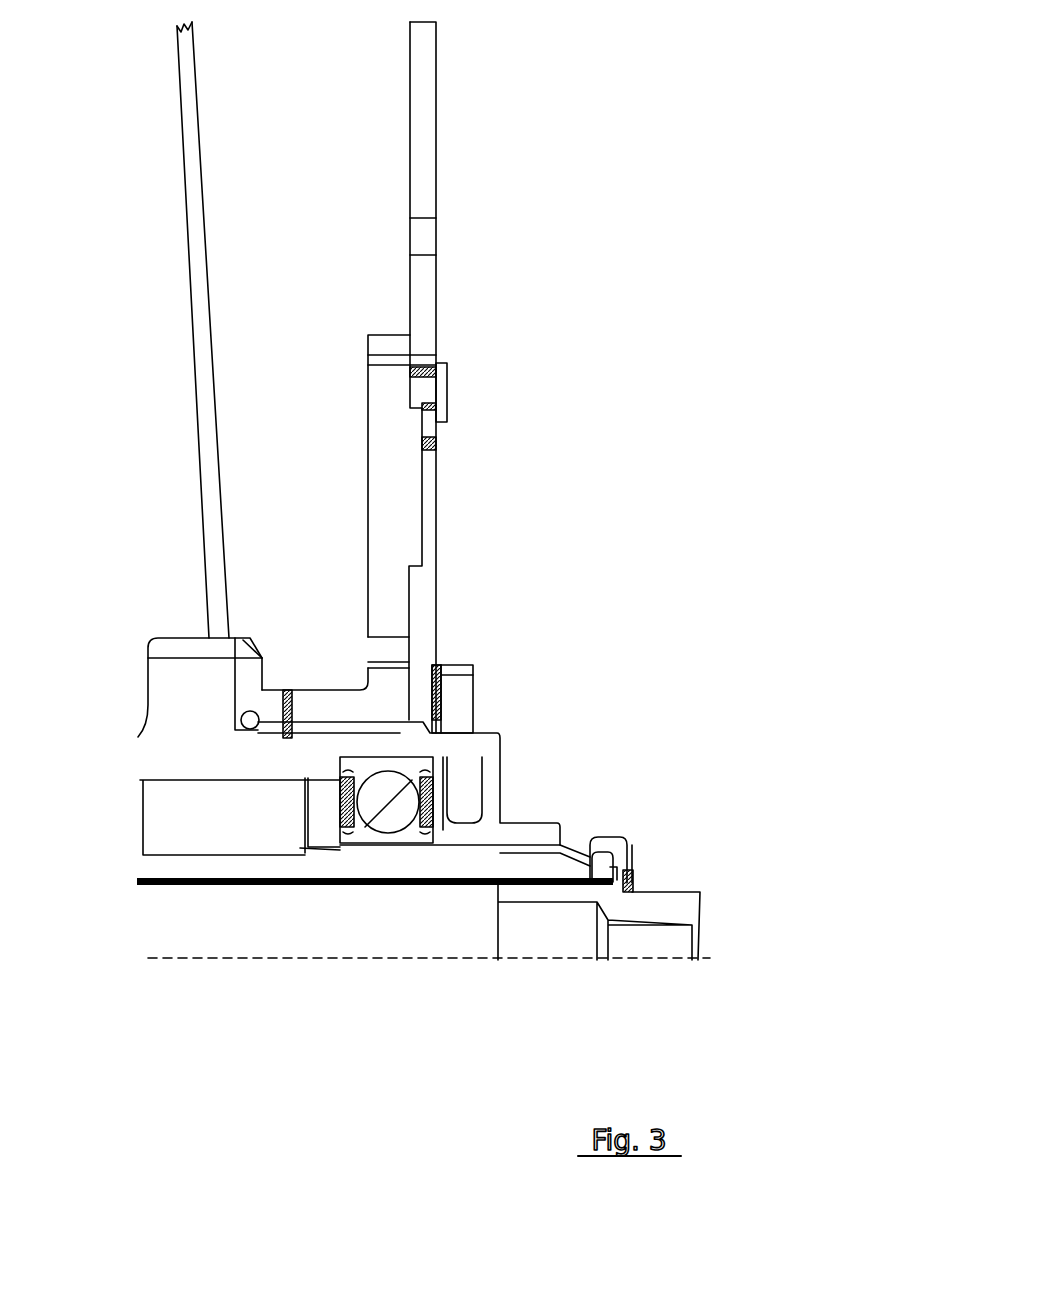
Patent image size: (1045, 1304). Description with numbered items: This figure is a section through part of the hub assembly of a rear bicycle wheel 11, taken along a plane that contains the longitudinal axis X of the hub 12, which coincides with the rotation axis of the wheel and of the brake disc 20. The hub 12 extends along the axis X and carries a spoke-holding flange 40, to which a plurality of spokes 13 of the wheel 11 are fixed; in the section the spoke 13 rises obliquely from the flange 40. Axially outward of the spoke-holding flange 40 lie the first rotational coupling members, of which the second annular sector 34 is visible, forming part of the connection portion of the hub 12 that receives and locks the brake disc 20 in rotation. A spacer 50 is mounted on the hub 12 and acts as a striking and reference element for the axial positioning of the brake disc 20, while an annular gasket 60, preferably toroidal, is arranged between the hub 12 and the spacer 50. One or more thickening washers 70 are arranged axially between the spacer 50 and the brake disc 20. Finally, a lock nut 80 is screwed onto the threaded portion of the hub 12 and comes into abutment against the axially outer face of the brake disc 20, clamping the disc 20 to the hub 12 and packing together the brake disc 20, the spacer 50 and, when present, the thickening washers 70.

The rear bicycle wheel 11 is at (508, 368).
The hub 12 is at (640, 876).
The spokes 13 is at (203, 327).
The brake disc 20 is at (436, 82).
The second annular sector 34 is at (349, 728).
The spoke-holding flange 40 is at (188, 692).
The spacer 50 is at (280, 713).
The annular gasket 60 is at (250, 722).
The thickening washer 70 is at (287, 737).
The lock nut 80 is at (460, 703).
The longitudinal axis X is at (163, 960).